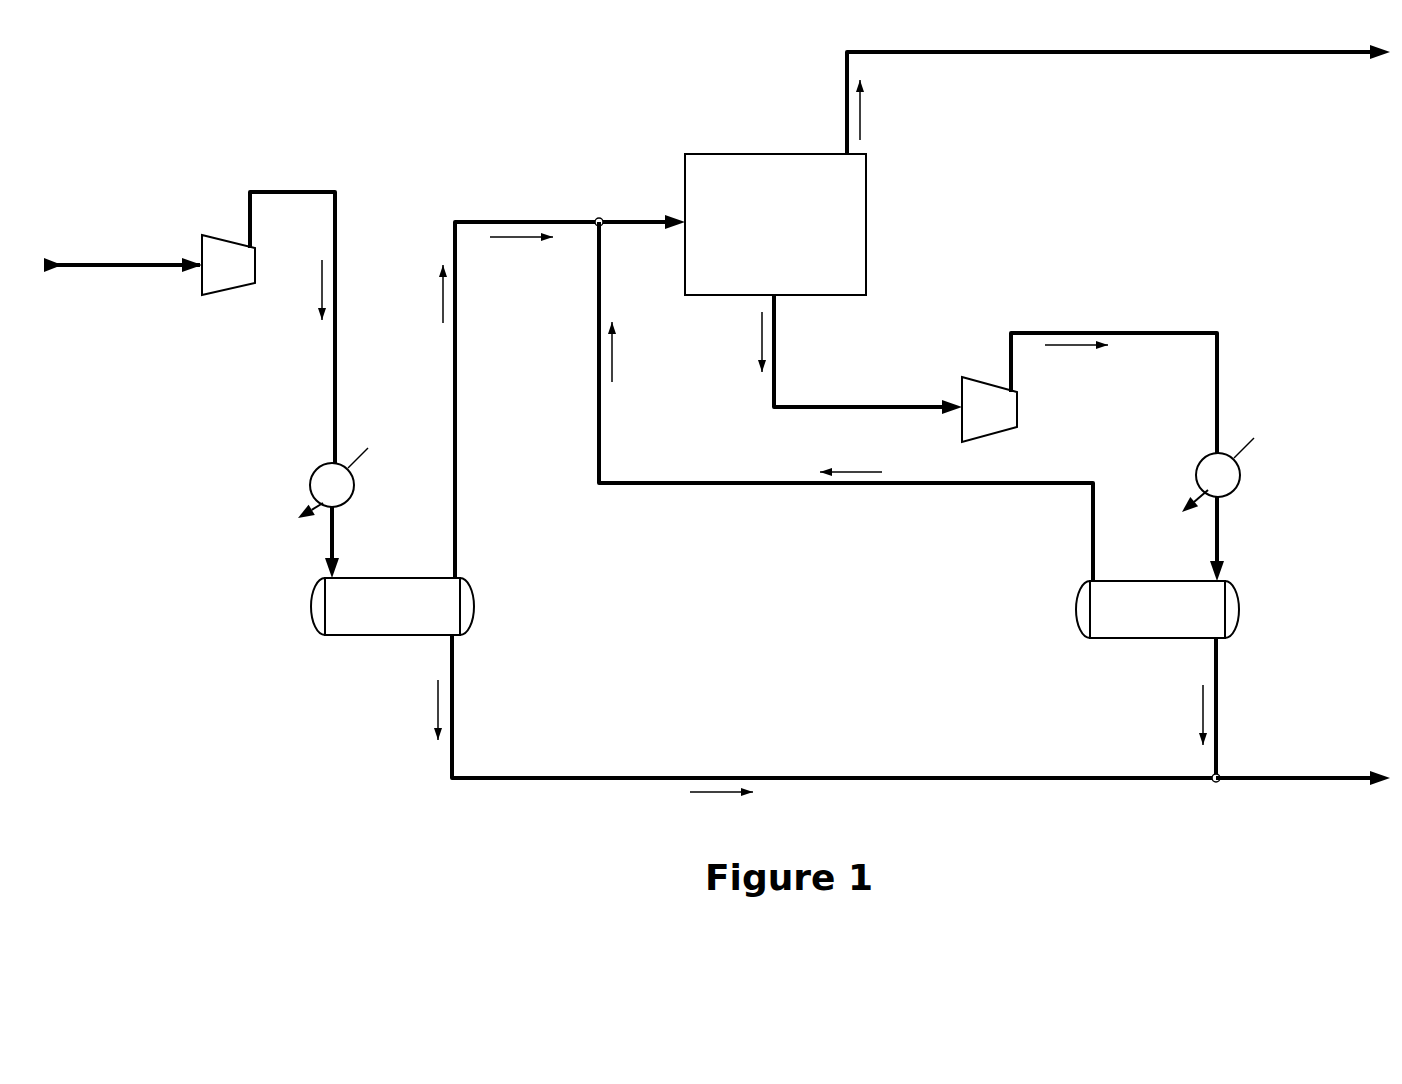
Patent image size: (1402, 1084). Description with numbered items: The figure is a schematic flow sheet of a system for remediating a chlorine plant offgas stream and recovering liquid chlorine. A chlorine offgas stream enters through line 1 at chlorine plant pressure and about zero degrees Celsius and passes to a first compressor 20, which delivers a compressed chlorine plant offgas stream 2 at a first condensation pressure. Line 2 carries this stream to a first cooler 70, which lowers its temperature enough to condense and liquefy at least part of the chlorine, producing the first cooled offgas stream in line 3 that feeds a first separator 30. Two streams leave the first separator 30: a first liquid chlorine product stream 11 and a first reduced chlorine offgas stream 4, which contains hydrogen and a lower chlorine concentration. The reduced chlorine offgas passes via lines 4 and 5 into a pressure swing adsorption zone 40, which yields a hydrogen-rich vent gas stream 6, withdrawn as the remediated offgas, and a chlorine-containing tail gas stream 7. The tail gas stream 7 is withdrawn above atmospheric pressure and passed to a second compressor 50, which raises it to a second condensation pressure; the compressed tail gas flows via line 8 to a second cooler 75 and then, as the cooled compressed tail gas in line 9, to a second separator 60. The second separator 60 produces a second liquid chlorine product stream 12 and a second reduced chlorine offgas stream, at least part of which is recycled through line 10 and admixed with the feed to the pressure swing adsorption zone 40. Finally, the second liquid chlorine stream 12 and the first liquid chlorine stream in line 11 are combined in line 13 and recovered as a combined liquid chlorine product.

The line 1 is at (123, 245).
The compressed chlorine plant offgas stream 2 is at (293, 303).
The line 3 is at (314, 542).
The first reduced chlorine offgas stream 4 is at (519, 376).
The line 5 is at (639, 201).
The vent gas stream 6 is at (1118, 99).
The tail gas stream 7 is at (860, 354).
The line 8 is at (1139, 370).
The line 9 is at (1236, 539).
The line 10 is at (816, 401).
The first liquid chlorine product stream 11 is at (825, 715).
The second liquid chlorine product stream 12 is at (1239, 710).
The line 13 is at (1303, 758).
The first compressor 20 is at (213, 286).
The first separator 30 is at (378, 632).
The pressure swing adsorption zone 40 is at (806, 224).
The second compressor 50 is at (967, 388).
The second separator 60 is at (1157, 635).
The first cooler 70 is at (315, 470).
The second cooler 75 is at (1197, 466).